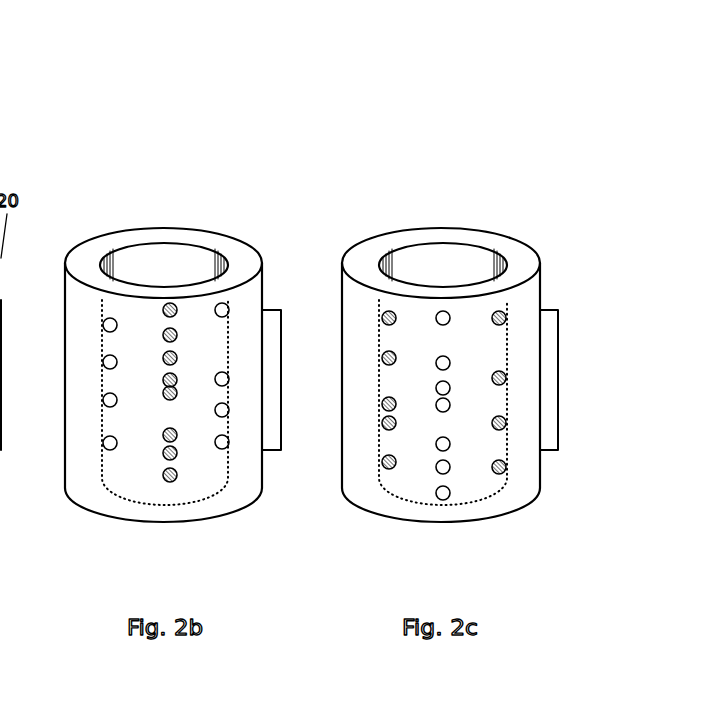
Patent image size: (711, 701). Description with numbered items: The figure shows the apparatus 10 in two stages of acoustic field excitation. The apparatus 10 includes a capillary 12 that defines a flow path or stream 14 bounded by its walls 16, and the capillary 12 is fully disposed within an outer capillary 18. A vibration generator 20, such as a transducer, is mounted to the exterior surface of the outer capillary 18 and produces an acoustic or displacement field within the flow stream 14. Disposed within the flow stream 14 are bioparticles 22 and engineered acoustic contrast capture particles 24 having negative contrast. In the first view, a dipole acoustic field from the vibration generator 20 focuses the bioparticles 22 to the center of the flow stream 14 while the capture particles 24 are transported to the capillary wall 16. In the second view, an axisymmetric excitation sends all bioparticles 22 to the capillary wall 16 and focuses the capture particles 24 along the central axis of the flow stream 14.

In FIG. 2B, the apparatus 10 is at (214, 119).
In FIG. 2C, the apparatus 10 is at (506, 114).
In FIG. 2B, the capillary 12 is at (118, 234).
In FIG. 2C, the capillary 12 is at (397, 234).
In FIG. 2B, the flow path or stream 14 is at (160, 259).
In FIG. 2C, the flow path or stream 14 is at (440, 259).
In FIG. 2B, the capillary wall 16 is at (208, 262).
In FIG. 2C, the capillary wall 16 is at (488, 262).
In FIG. 2B, the outer capillary 18 is at (59, 325).
In FIG. 2C, the outer capillary 18 is at (335, 325).
In FIG. 2B, the vibration generator 20 is at (270, 297).
In FIG. 2C, the vibration generator 20 is at (550, 297).
In FIG. 2B, the bioparticles 22 is at (165, 400).
In FIG. 2C, the bioparticles 22 is at (383, 458).
In FIG. 2B, the engineered acoustic contrast capture particles 24 is at (103, 398).
In FIG. 2C, the engineered acoustic contrast capture particles 24 is at (449, 410).